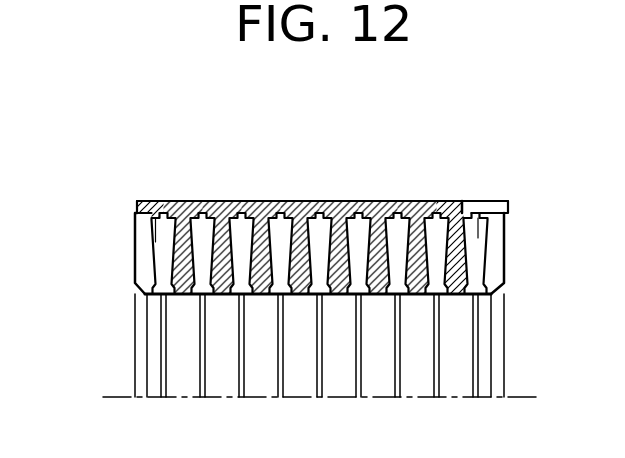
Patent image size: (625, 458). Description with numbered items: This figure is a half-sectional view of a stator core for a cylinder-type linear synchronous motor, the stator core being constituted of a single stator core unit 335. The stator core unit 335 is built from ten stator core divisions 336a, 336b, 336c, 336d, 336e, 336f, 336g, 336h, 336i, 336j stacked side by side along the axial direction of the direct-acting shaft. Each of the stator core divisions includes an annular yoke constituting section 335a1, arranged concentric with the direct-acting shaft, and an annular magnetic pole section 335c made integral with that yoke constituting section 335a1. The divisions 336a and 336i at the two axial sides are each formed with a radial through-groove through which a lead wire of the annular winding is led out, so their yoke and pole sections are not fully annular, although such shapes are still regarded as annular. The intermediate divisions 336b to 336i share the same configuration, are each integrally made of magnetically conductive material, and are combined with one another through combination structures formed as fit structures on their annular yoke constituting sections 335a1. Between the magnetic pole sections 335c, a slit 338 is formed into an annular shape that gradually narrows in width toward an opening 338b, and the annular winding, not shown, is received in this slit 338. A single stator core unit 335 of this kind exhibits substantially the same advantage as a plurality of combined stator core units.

The stator core unit 335 is at (475, 188).
The yoke constituting section 335a1 is at (140, 202).
The magnetic pole section 335c is at (505, 279).
The stator core division 336a is at (141, 203).
The stator core division 336b is at (177, 202).
The stator core division 336c is at (215, 202).
The stator core division 336d is at (248, 202).
The stator core division 336e is at (295, 202).
The stator core division 336f is at (323, 202).
The stator core division 336g is at (368, 202).
The stator core division 336h is at (403, 202).
The stator core division 336i is at (445, 202).
The stator core division 336j is at (495, 202).
The slit 338 is at (477, 237).
The opening 338b is at (476, 303).